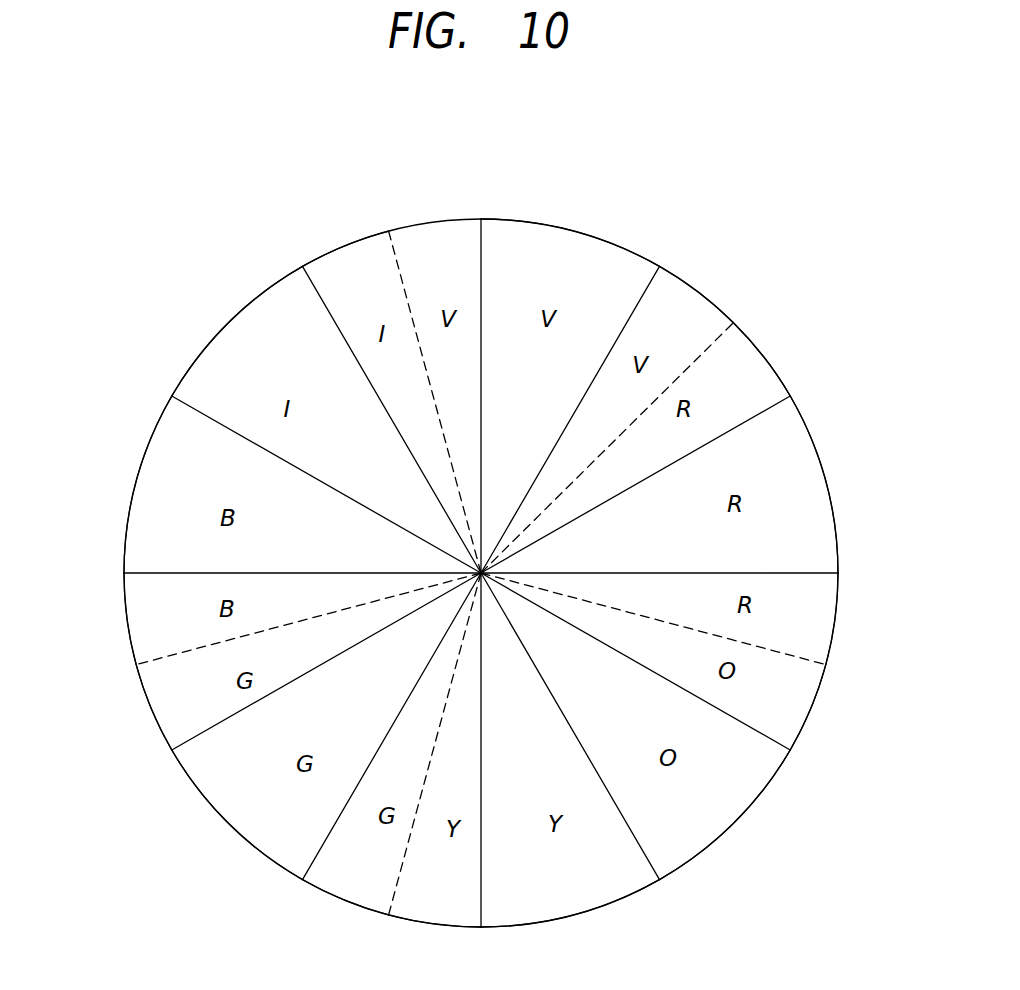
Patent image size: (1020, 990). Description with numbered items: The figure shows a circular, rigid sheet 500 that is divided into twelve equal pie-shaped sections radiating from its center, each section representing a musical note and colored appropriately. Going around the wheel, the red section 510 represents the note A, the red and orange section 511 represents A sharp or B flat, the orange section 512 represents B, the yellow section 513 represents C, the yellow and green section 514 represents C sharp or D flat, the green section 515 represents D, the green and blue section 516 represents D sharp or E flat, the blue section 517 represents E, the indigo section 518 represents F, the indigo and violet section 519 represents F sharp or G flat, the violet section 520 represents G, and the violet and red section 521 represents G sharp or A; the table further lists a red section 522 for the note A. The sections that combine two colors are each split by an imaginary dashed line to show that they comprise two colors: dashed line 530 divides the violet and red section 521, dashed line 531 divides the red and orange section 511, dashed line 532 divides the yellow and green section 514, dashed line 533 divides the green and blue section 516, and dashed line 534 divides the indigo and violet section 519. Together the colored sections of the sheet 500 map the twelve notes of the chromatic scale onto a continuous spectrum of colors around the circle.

The circular rigid sheet 500 is at (642, 257).
The red section 510 is at (830, 487).
The red and orange section 511 is at (835, 620).
The orange section 512 is at (760, 793).
The yellow section 513 is at (627, 902).
The yellow and green section 514 is at (437, 928).
The green section 515 is at (277, 865).
The green and blue section 516 is at (157, 727).
The blue section 517 is at (128, 540).
The indigo section 518 is at (190, 365).
The indigo and violet section 519 is at (322, 255).
The violet section 520 is at (490, 219).
The violet and red section 521 is at (683, 280).
The red section 522 is at (792, 400).
The imaginary dashed line 530 is at (733, 320).
The imaginary dashed line 531 is at (826, 662).
The imaginary dashed line 532 is at (391, 915).
The imaginary dashed line 533 is at (135, 665).
The imaginary dashed line 534 is at (387, 230).